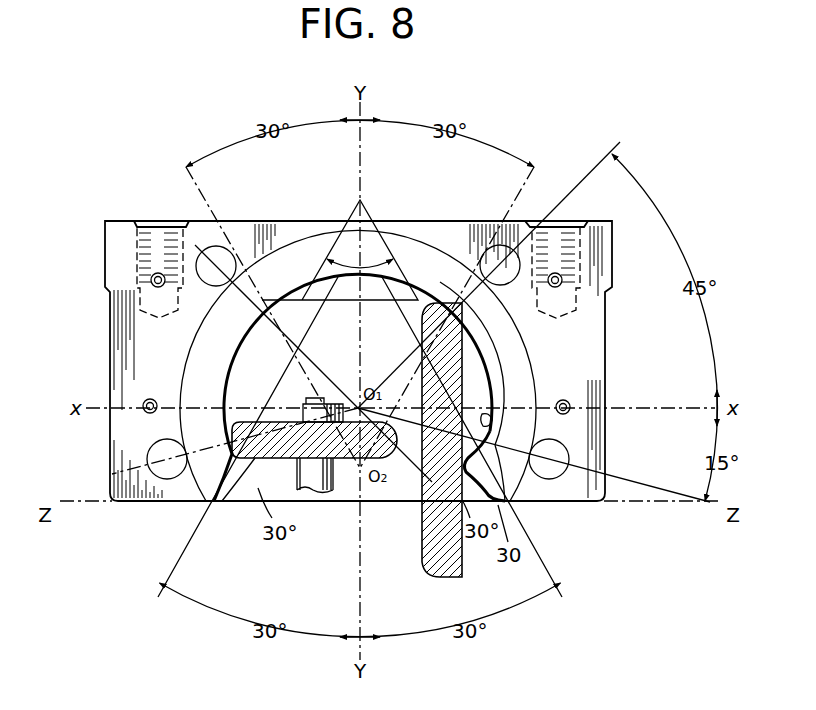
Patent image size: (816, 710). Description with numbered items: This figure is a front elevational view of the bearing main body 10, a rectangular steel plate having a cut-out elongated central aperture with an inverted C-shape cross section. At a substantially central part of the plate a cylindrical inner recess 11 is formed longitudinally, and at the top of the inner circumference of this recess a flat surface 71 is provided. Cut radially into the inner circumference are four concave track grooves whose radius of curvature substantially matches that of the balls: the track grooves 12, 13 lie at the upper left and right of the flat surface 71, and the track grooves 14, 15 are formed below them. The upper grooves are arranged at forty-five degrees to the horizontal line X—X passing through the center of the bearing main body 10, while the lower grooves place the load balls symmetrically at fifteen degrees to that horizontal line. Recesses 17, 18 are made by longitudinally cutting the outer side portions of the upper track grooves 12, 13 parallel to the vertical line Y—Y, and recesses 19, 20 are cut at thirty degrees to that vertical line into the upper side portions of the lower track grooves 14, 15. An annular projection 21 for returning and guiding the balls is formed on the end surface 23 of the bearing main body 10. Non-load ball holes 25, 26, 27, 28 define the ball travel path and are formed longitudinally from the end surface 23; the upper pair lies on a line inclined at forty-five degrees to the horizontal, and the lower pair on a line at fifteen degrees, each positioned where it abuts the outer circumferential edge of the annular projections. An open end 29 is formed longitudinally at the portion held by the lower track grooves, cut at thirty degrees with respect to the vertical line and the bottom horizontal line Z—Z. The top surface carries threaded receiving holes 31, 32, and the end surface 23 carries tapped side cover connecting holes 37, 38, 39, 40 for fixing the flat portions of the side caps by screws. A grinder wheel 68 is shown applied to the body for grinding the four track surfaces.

The bearing main body 10 is at (470, 218).
The cylindrical inner recess 11 is at (285, 338).
The track groove 12 is at (280, 305).
The track groove 13 is at (437, 305).
The track groove 14 is at (224, 448).
The track groove 15 is at (499, 422).
The recess 17 is at (263, 332).
The recess 18 is at (466, 334).
The recess 19 is at (232, 416).
The recess 20 is at (488, 413).
The annular projection 21 is at (513, 330).
The end surface 23 is at (605, 359).
The non-load ball hole 25 is at (222, 247).
The non-load ball hole 26 is at (500, 246).
The non-load ball hole 27 is at (165, 480).
The non-load ball hole 28 is at (552, 480).
The open end 29 is at (236, 501).
The threaded receiving hole 31 is at (152, 228).
The threaded receiving hole 32 is at (570, 232).
The side cover connecting hole 37 is at (160, 290).
The side cover connecting hole 38 is at (150, 414).
The side cover connecting hole 39 is at (558, 290).
The side cover connecting hole 40 is at (572, 410).
The grinder wheel 68 is at (392, 462).
The flat surface 71 is at (376, 303).